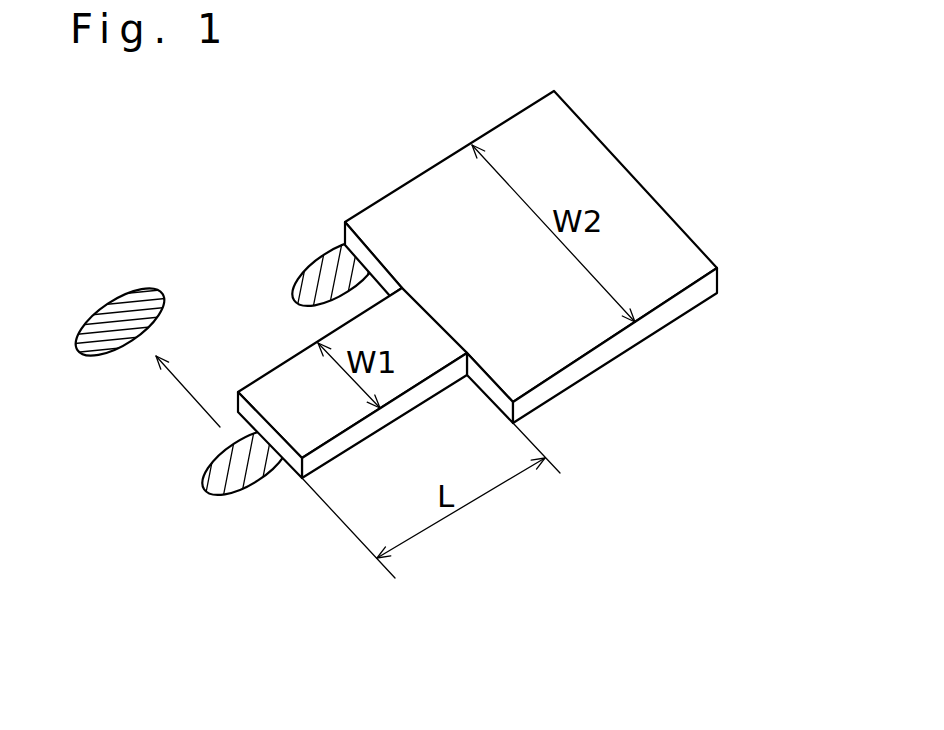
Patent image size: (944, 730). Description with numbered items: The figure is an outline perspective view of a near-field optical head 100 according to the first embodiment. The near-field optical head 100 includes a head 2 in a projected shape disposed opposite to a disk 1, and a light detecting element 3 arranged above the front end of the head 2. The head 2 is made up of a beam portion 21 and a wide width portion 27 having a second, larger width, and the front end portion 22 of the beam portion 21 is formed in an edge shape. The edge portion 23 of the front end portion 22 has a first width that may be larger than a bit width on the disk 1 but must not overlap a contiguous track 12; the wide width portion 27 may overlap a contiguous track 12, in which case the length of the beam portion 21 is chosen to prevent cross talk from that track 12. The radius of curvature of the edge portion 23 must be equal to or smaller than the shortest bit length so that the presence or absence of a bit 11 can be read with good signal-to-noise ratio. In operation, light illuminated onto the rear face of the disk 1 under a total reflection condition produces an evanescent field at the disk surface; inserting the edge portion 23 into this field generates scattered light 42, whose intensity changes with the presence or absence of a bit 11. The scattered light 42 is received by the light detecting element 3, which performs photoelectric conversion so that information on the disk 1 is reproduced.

The near-field optical head 100 is at (163, 185).
The disk 1 is at (200, 537).
The head 2 is at (485, 112).
The light detecting element 3 is at (132, 298).
The bit 11 is at (205, 470).
The track 12 is at (300, 272).
The beam portion 21 is at (405, 373).
The front end portion 22 is at (262, 397).
The edge portion 23 is at (297, 477).
The wide width portion 27 is at (607, 330).
The scattered light 42 is at (187, 397).